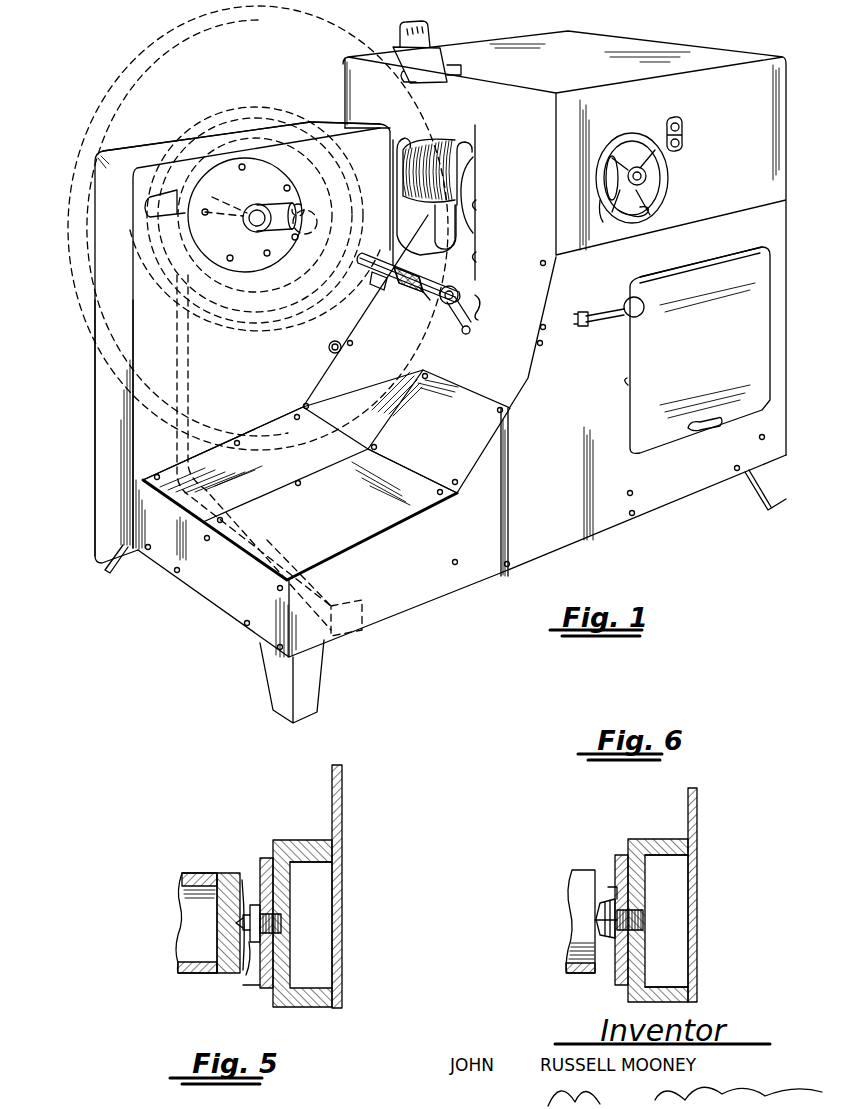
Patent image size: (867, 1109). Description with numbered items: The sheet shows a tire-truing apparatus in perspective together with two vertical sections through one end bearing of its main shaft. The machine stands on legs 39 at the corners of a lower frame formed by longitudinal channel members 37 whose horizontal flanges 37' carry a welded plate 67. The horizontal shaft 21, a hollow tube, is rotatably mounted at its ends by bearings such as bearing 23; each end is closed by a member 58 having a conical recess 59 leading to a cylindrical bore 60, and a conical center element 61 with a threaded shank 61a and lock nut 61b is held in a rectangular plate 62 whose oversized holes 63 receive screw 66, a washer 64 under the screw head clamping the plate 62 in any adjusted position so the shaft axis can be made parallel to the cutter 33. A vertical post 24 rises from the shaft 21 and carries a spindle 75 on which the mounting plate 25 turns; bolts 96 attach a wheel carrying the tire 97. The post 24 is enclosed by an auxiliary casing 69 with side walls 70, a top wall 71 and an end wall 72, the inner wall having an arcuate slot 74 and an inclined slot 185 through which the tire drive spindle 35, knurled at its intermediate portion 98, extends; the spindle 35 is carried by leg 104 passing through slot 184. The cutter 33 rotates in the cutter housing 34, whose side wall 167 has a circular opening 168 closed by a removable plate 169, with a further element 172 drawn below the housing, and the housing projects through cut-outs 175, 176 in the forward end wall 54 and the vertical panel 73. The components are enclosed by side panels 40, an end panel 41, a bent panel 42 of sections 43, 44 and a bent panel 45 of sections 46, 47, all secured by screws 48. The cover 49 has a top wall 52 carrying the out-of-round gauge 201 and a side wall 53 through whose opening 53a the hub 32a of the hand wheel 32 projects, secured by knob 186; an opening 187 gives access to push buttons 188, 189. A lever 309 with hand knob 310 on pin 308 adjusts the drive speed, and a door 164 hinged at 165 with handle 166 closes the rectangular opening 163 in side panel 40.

In FIG. 1, the horizontal shaft 21 is at (267, 540).
In FIG. 5, the horizontal shaft 21 is at (190, 873).
In FIG. 6, the horizontal shaft 21 is at (578, 877).
In FIG. 5, the bearing 23 is at (243, 986).
In FIG. 6, the bearing 23 is at (600, 981).
In FIG. 1, the vertical post 24 is at (177, 358).
In FIG. 1, the wheel adapter or mounting plate 25 is at (250, 258).
In FIG. 1, the hand wheel 32 is at (660, 193).
In FIG. 1, the cylindrical hub 32a is at (610, 156).
In FIG. 1, the cutter 33 is at (440, 150).
In FIG. 1, the cutter housing 34 is at (460, 273).
In FIG. 1, the tire drive spindle 35 is at (427, 300).
In FIG. 5, the longitudinal channel member 37 is at (313, 932).
In FIG. 6, the longitudinal channel member 37 is at (681, 920).
In FIG. 6, the horizontal flange 37' is at (680, 1003).
In FIG. 1, the legs 39 is at (105, 566).
In FIG. 1, the side panel 40 is at (553, 448).
In FIG. 5, the side panel 40 is at (342, 802).
In FIG. 6, the side panel 40 is at (697, 805).
In FIG. 1, the end panel 41 is at (200, 583).
In FIG. 1, the bent panel 42 is at (410, 489).
In FIG. 1, the panel section 43 is at (354, 509).
In FIG. 1, the panel section 44 is at (428, 430).
In FIG. 1, the bent panel 45 is at (244, 447).
In FIG. 1, the panel section 46 is at (268, 469).
In FIG. 1, the panel section 47 is at (444, 355).
In FIG. 1, the screws 48 is at (373, 533).
In FIG. 1, the cover 49 is at (734, 46).
In FIG. 1, the horizontal top wall 52 is at (590, 65).
In FIG. 1, the side wall 53 is at (758, 191).
In FIG. 1, the opening 53a is at (600, 210).
In FIG. 1, the forward end wall 54 is at (530, 174).
In FIG. 5, the end member 58 is at (228, 873).
In FIG. 5, the conical recess 59 is at (247, 910).
In FIG. 5, the cylindrical bore 60 is at (236, 923).
In FIG. 5, the conical center element 61 is at (243, 928).
In FIG. 5, the threaded shank 61a is at (281, 916).
In FIG. 5, the lock nut 61b is at (246, 975).
In FIG. 5, the rectangular plate 62 is at (263, 987).
In FIG. 6, the rectangular plate 62 is at (618, 855).
In FIG. 6, the holes 63 is at (607, 903).
In FIG. 6, the washer 64 is at (585, 971).
In FIG. 6, the screw 66 is at (645, 915).
In FIG. 5, the plate 67 is at (293, 860).
In FIG. 6, the plate 67 is at (648, 853).
In FIG. 1, the auxiliary casing 69 is at (151, 149).
In FIG. 1, the vertical side wall 70 is at (143, 440).
In FIG. 1, the top horizontal wall 71 is at (193, 148).
In FIG. 1, the vertical end wall 72 is at (102, 422).
In FIG. 1, the vertical panel 73 is at (503, 292).
In FIG. 1, the arcuate slot 74 is at (162, 222).
In FIG. 1, the spindle 75 is at (232, 202).
In FIG. 1, the bolts 96 is at (308, 222).
In FIG. 1, the tire 97 is at (118, 88).
In FIG. 1, the knurled intermediate portion 98 is at (403, 288).
In FIG. 1, the upwardly and forwardly inclined leg 104 is at (472, 330).
In FIG. 1, the rectangular opening 163 is at (627, 383).
In FIG. 1, the door 164 is at (715, 350).
In FIG. 1, the hinge 165 is at (693, 262).
In FIG. 1, the handle 166 is at (703, 430).
In FIG. 1, the side wall 167 is at (487, 230).
In FIG. 1, the circular opening 168 is at (476, 160).
In FIG. 1, the plate 169 is at (474, 183).
In FIG. 1, the spring plunger loop 172 is at (440, 237).
In FIG. 1, the cut-out 175 is at (476, 204).
In FIG. 1, the cut-out 176 is at (476, 256).
In FIG. 1, the slot 184 is at (478, 313).
In FIG. 1, the inclined slot 185 is at (345, 347).
In FIG. 1, the knob 186 is at (637, 167).
In FIG. 1, the opening 187 is at (683, 140).
In FIG. 1, the push button 188 is at (677, 122).
In FIG. 1, the push button 189 is at (679, 145).
In FIG. 1, the out-of-round gauge 201 is at (441, 55).
In FIG. 1, the pin 308 is at (587, 326).
In FIG. 1, the lever 309 is at (603, 313).
In FIG. 1, the hand knob 310 is at (638, 315).